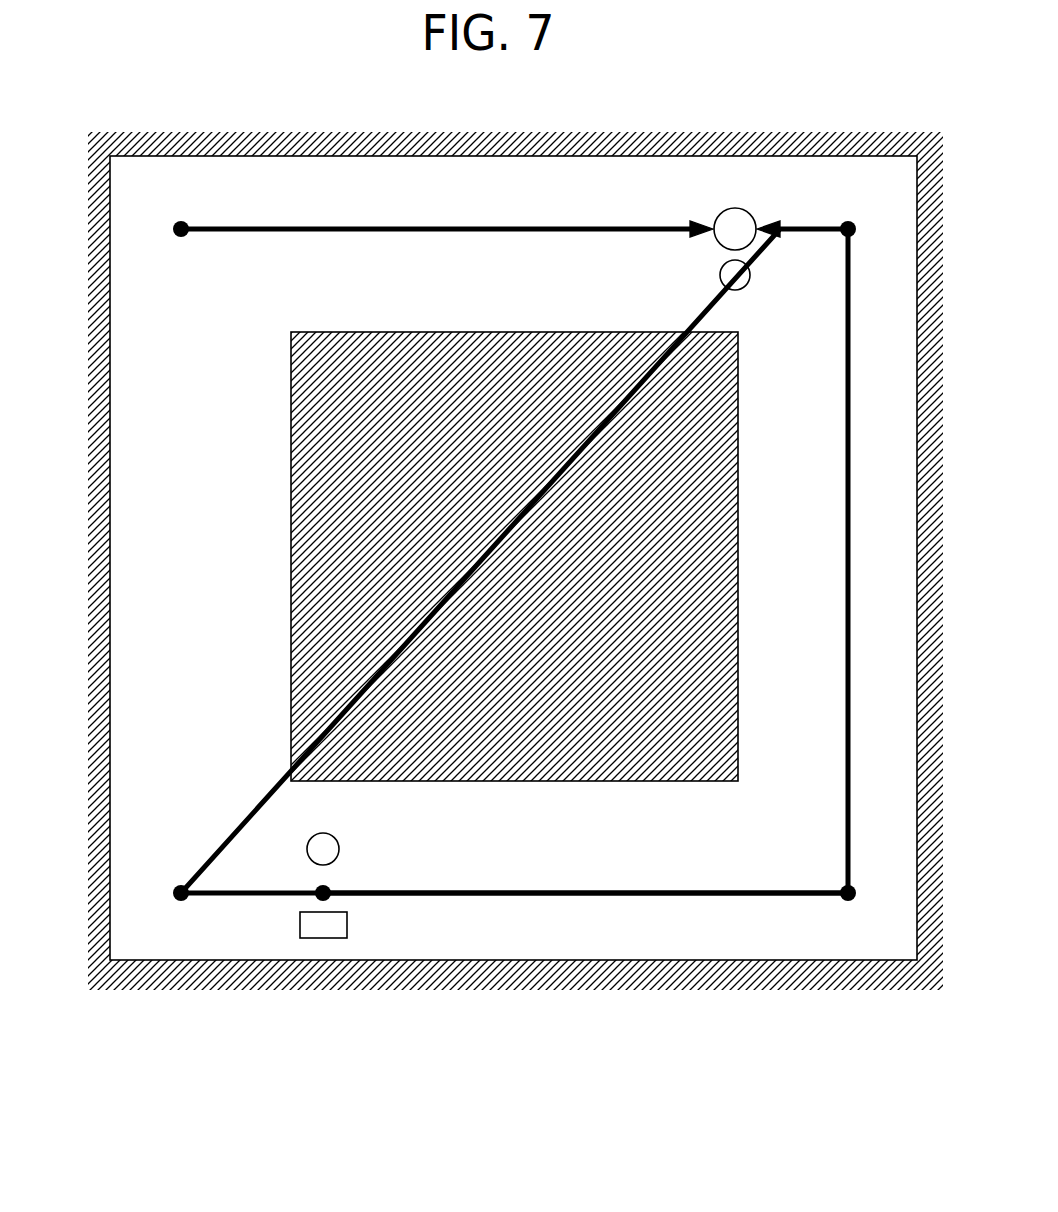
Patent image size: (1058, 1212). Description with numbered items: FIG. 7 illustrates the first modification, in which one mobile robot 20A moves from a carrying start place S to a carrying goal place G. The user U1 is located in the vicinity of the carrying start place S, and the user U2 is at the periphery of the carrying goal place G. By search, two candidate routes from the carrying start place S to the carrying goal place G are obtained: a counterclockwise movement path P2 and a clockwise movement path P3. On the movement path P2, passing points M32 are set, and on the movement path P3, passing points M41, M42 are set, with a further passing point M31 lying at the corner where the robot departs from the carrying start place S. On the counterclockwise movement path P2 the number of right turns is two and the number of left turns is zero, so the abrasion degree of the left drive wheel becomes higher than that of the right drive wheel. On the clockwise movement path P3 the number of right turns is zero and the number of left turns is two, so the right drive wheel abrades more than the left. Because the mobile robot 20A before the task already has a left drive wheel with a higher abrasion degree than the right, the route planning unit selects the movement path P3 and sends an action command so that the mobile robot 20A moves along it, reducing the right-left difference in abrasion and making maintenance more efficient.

The passing point M31 is at (177, 900).
The passing point M32 is at (177, 223).
The passing point M41 is at (843, 888).
The passing point M42 is at (843, 222).
The carrying start place S is at (318, 888).
The user U1 is at (340, 849).
The user U2 is at (720, 275).
The counterclockwise movement path P2 is at (177, 363).
The clockwise movement path P3 is at (740, 897).
The carrying goal place G is at (735, 229).
The mobile robot 20A is at (316, 940).